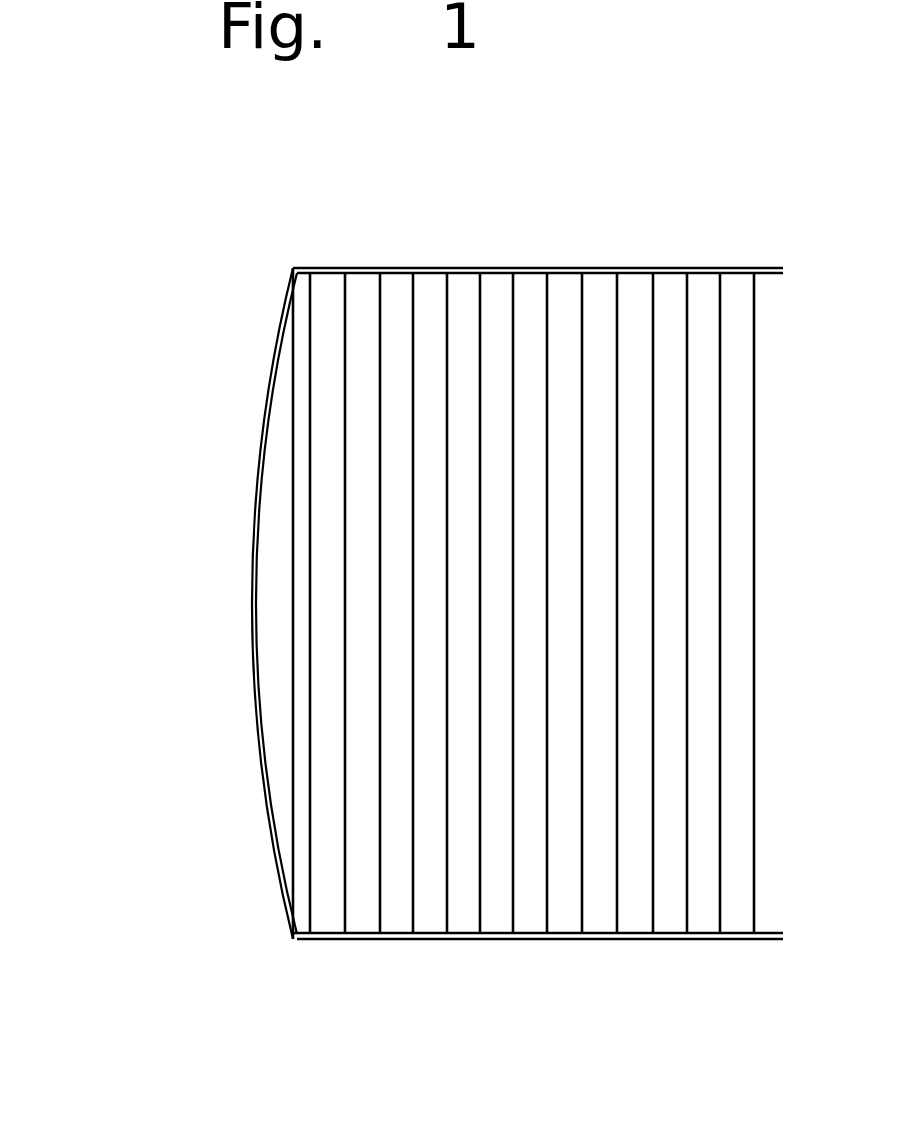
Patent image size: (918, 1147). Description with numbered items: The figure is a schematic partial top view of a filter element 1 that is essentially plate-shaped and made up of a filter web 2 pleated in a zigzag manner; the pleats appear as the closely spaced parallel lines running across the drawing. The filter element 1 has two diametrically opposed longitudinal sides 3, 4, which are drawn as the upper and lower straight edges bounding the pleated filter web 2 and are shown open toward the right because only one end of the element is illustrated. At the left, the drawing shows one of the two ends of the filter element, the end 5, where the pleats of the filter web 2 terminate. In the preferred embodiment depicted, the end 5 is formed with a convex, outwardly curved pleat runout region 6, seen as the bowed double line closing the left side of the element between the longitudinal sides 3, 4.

The filter element 1 is at (419, 595).
The filter web 2 is at (533, 338).
The longitudinal side 3 is at (643, 940).
The longitudinal side 4 is at (640, 270).
The end 5 is at (280, 558).
The pleat runout region 6 is at (283, 317).